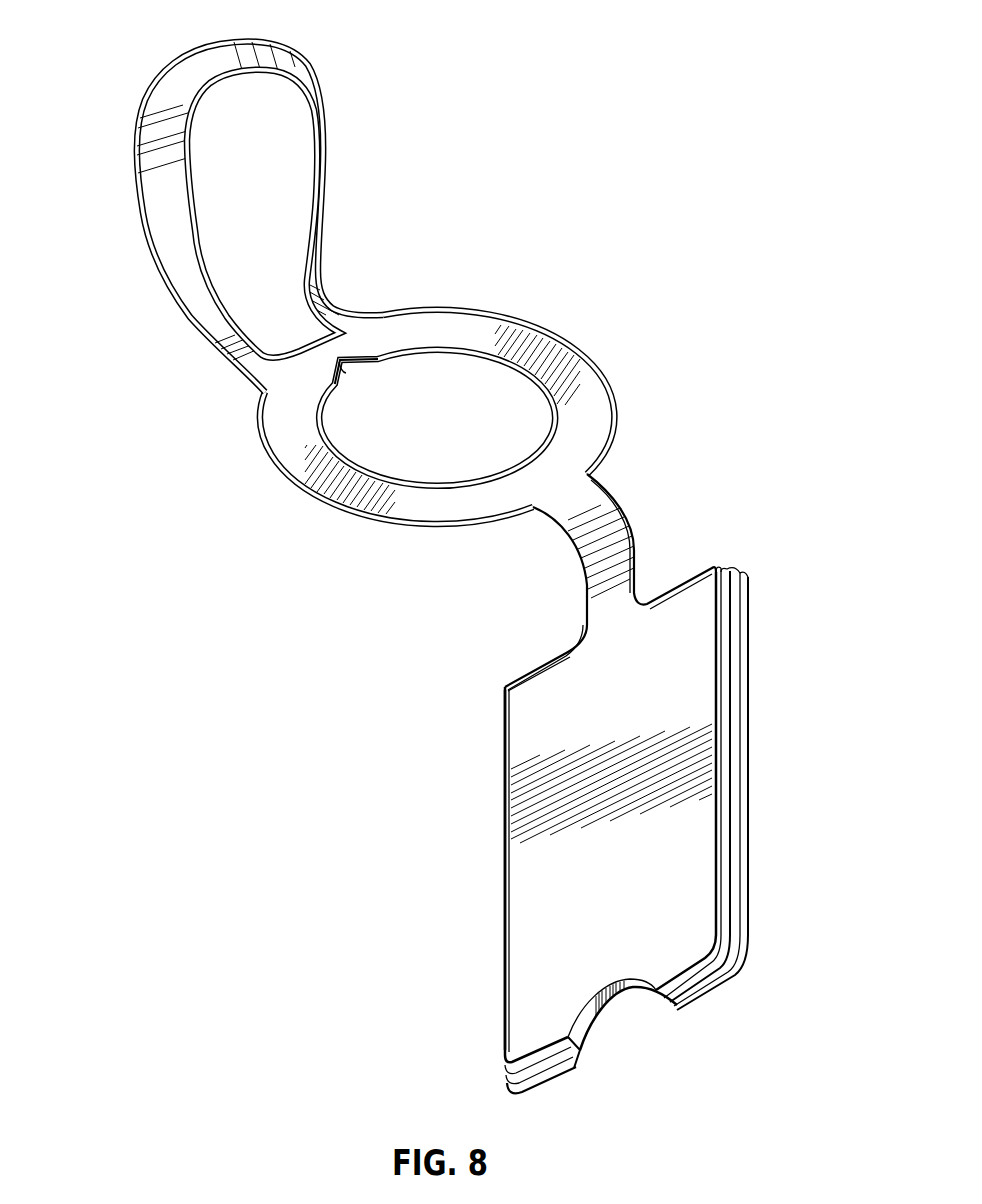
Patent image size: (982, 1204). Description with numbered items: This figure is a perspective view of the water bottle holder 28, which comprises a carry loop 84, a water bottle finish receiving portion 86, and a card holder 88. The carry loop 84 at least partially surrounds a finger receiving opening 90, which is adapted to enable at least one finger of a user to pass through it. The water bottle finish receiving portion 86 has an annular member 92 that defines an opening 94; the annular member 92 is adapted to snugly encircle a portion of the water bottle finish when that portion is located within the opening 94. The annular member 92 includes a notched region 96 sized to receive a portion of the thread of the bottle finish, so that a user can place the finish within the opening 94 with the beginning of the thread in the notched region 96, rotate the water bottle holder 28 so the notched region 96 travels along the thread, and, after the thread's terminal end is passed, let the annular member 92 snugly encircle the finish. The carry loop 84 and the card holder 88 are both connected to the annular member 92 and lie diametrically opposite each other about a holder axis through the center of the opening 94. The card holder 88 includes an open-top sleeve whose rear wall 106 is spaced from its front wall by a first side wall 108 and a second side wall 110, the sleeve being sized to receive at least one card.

The water bottle holder 28 is at (449, 568).
The carry loop 84 is at (158, 267).
The finger receiving opening 90 is at (187, 193).
The water bottle finish receiving portion 86 is at (295, 448).
The opening 94 is at (518, 414).
The notched region 96 is at (345, 365).
The annular member 92 is at (458, 530).
The card holder 88 is at (533, 953).
The rear wall 106 is at (538, 722).
The first side wall 108 is at (730, 900).
The second side wall 110 is at (592, 597).